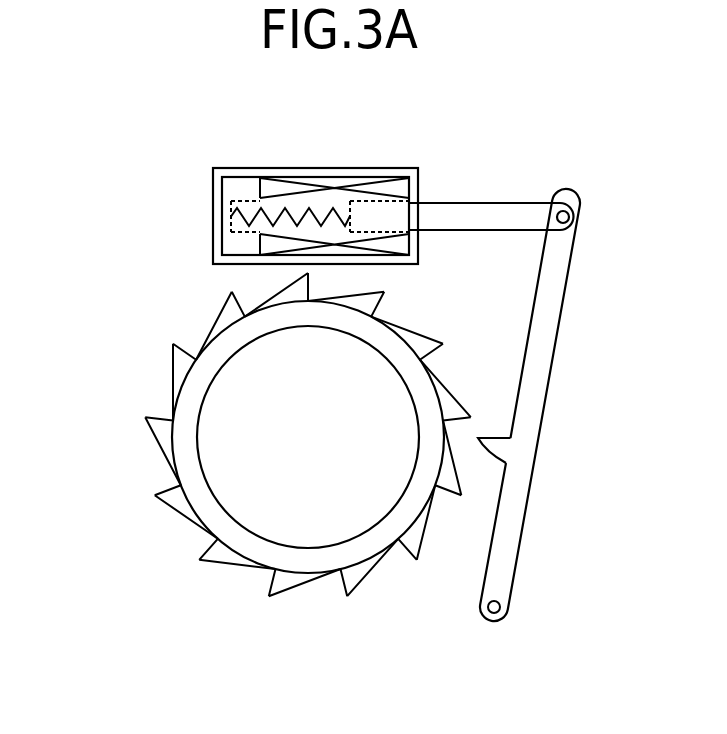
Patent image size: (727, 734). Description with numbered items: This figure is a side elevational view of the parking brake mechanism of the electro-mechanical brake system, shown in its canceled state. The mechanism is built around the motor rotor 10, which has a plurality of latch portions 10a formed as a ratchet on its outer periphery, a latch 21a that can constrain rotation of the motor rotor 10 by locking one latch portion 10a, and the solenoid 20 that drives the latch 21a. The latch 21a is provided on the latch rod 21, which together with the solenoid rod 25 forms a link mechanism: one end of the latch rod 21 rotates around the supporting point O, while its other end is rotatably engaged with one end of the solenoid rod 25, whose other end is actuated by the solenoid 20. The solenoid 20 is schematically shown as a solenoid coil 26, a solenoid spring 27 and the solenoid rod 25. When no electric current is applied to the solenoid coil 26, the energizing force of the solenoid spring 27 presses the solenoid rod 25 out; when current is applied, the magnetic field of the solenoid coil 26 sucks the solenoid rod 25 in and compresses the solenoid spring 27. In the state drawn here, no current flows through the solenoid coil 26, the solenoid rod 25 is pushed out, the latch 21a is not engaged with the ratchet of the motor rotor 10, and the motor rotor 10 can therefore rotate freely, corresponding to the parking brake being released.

The motor rotor 10 is at (200, 505).
The latch portions 10a is at (165, 435).
The solenoid 20 is at (278, 168).
The solenoid coil 26 is at (345, 182).
The solenoid spring 27 is at (237, 205).
The solenoid rod 25 is at (487, 202).
The latch rod 21 is at (540, 364).
The latch 21a is at (497, 448).
The supporting point O is at (500, 607).